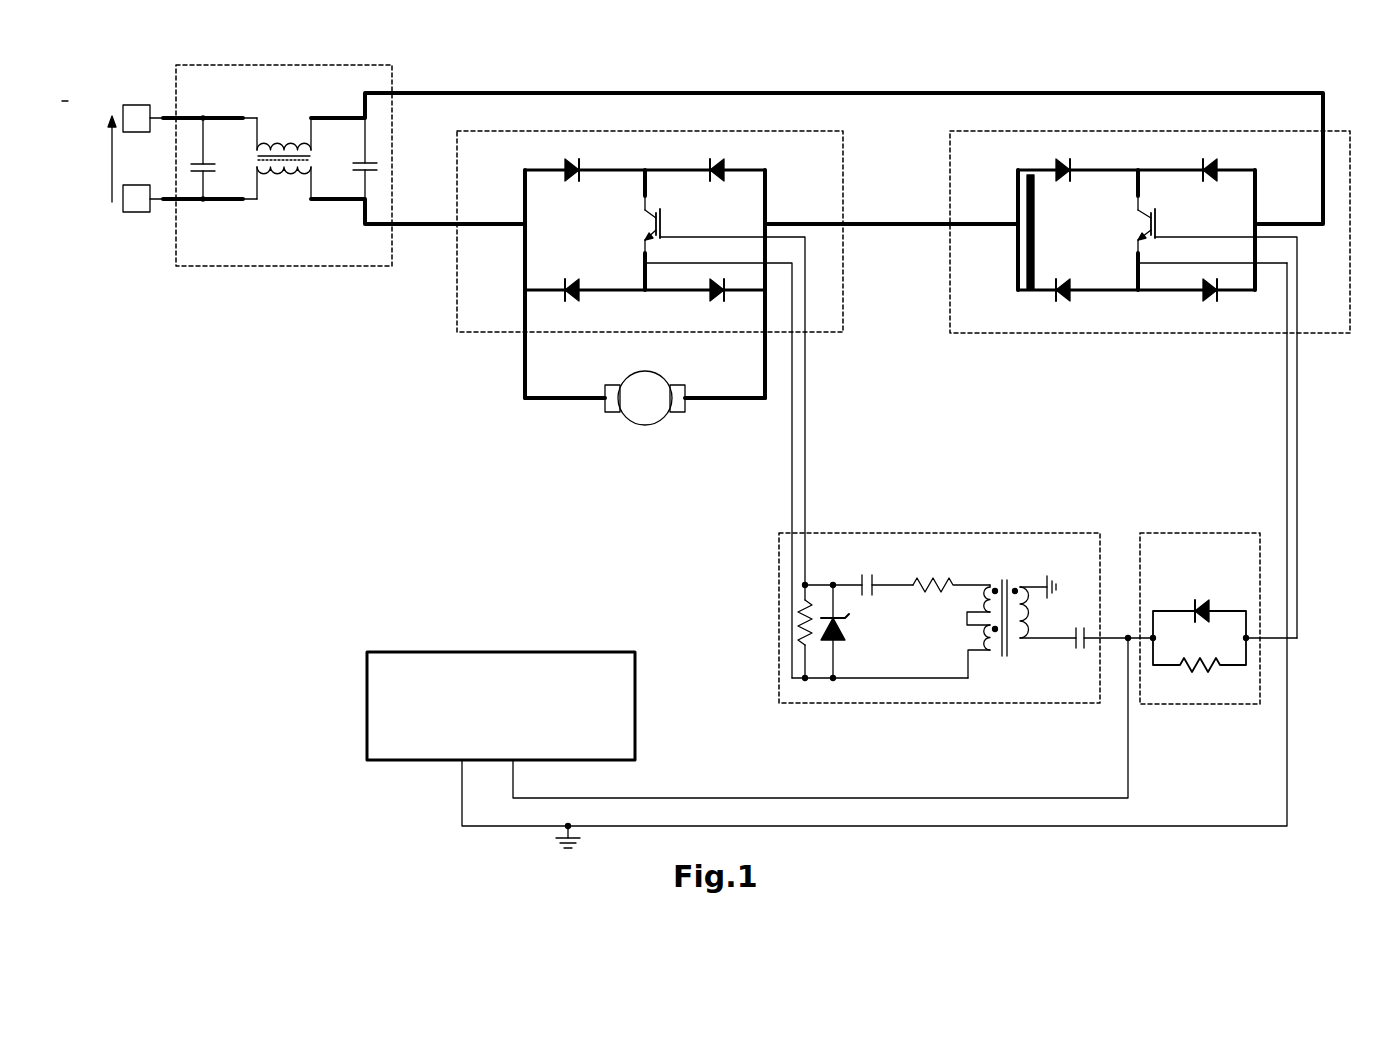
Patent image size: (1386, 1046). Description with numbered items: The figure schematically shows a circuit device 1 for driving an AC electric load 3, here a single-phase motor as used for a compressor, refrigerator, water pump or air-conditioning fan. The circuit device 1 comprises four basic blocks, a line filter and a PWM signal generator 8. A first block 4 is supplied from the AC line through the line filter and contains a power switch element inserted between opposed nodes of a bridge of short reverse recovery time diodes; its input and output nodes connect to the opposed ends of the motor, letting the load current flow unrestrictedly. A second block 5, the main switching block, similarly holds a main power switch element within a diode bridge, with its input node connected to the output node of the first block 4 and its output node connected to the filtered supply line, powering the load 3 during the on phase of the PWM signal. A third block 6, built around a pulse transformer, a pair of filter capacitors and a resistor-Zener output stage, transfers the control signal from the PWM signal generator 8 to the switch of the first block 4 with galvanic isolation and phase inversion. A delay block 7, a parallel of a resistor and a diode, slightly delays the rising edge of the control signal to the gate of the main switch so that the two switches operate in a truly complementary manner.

The circuit device 1 is at (508, 480).
The AC electric load 3 is at (665, 418).
The first block 4 is at (650, 404).
The second block 5 is at (1150, 384).
The third block 6 is at (959, 618).
The delay block 7 is at (1218, 618).
The PWM signal generator 8 is at (501, 706).